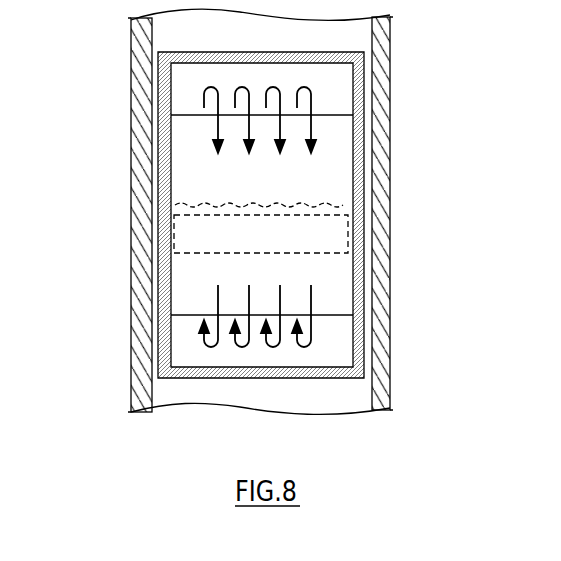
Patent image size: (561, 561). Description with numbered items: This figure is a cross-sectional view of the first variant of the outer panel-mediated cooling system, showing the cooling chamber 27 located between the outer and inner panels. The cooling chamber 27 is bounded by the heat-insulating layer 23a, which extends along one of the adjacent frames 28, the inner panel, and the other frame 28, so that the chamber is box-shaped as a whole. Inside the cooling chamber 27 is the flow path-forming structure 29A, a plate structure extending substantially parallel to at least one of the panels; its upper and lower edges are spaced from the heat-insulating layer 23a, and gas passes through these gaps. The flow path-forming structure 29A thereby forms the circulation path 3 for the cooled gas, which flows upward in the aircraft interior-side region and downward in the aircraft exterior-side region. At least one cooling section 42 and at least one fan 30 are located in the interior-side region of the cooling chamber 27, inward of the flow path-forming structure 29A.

The frame 28 is at (131, 63).
The heat-insulating layer 23a is at (365, 179).
The cooling chamber 27 is at (343, 100).
The flow path-forming structure 29A is at (335, 315).
The circulation path 3 is at (203, 100).
The fan 30 is at (172, 205).
The cooling section 42 is at (174, 253).